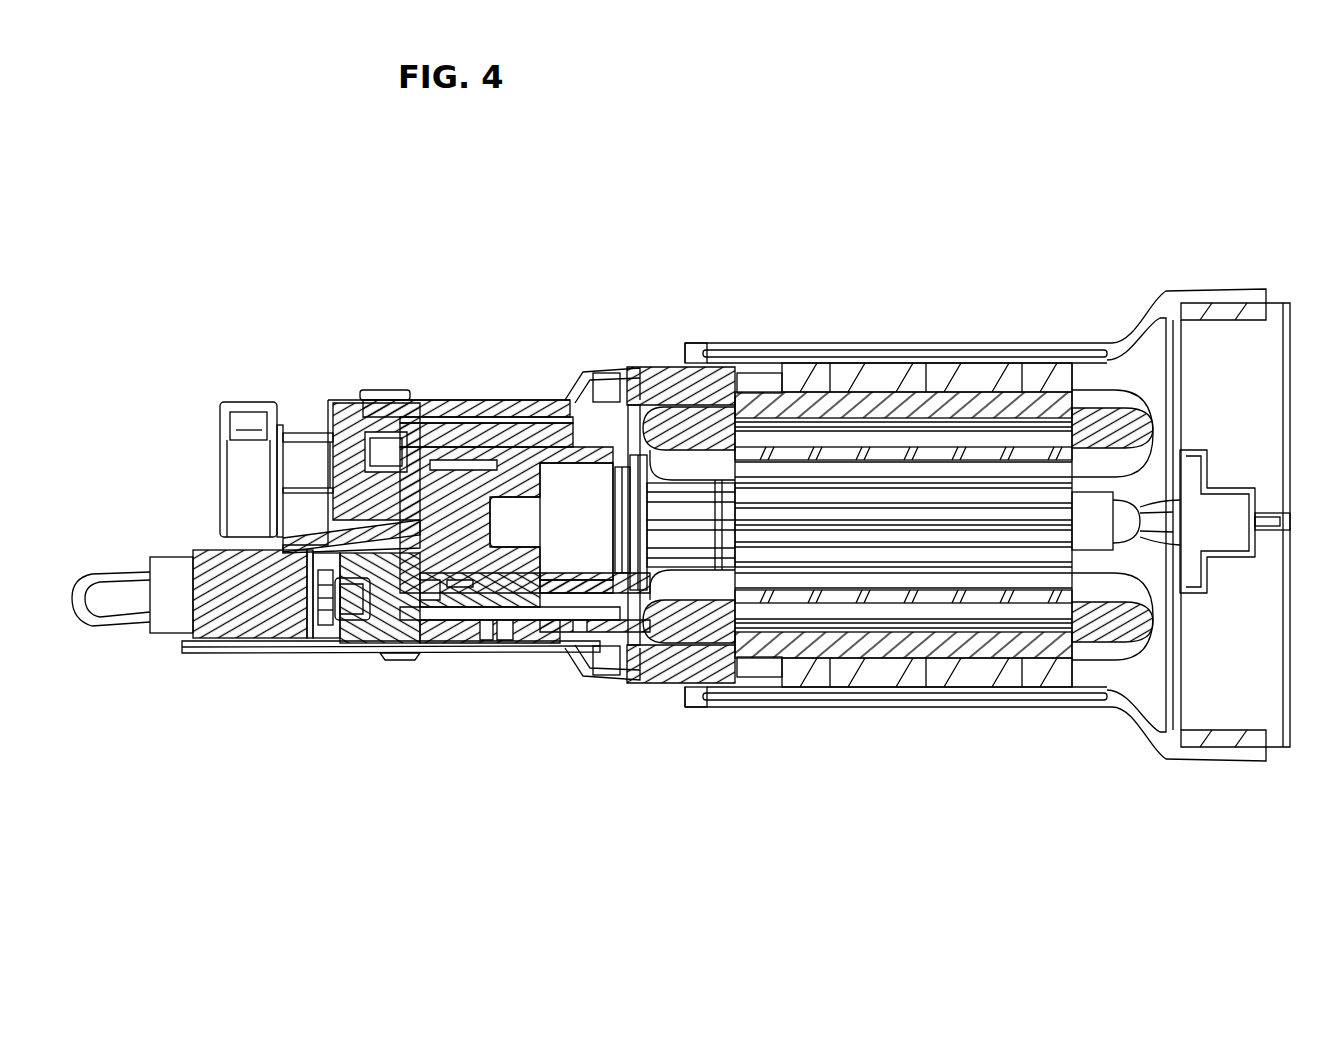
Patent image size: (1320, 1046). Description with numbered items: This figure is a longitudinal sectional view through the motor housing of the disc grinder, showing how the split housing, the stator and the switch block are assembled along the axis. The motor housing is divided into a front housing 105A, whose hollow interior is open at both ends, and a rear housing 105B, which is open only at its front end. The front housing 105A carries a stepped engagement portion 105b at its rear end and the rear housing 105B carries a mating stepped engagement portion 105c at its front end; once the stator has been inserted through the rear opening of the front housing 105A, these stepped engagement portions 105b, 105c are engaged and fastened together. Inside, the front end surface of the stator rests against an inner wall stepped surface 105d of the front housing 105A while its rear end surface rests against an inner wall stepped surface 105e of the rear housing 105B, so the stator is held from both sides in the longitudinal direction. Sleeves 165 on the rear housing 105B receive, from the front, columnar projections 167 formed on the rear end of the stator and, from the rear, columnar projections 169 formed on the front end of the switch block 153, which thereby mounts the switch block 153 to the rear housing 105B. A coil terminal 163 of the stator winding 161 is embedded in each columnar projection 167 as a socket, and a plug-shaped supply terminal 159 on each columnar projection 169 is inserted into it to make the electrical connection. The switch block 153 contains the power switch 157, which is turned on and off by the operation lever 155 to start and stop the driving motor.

The switch block 153 is at (335, 393).
The operation lever 155 is at (97, 628).
The power switch 157 is at (358, 605).
The supply terminal 159 is at (515, 405).
The stator winding 161 is at (699, 410).
The coil terminal 163 is at (540, 405).
The sleeve 165 is at (452, 400).
The columnar projection 167 is at (572, 400).
The columnar projection 169 is at (430, 400).
The front housing 105A is at (955, 341).
The rear housing 105B is at (628, 350).
The stepped engagement portion 105b is at (730, 365).
The stepped engagement portion 105c is at (712, 675).
The inner wall stepped surface 105d is at (1056, 395).
The inner wall stepped surface 105e is at (750, 400).